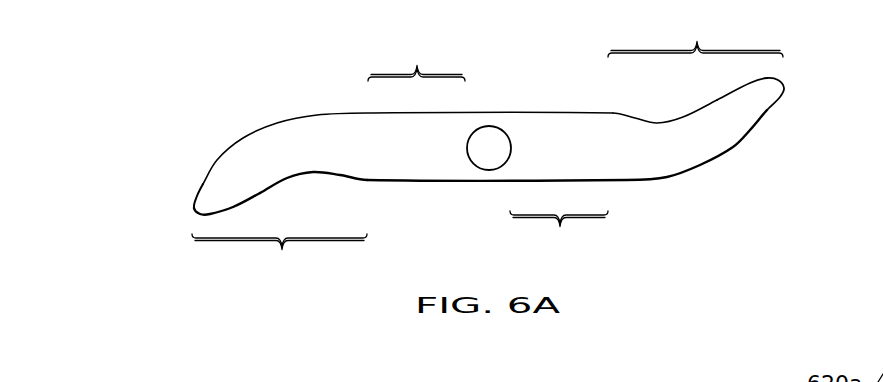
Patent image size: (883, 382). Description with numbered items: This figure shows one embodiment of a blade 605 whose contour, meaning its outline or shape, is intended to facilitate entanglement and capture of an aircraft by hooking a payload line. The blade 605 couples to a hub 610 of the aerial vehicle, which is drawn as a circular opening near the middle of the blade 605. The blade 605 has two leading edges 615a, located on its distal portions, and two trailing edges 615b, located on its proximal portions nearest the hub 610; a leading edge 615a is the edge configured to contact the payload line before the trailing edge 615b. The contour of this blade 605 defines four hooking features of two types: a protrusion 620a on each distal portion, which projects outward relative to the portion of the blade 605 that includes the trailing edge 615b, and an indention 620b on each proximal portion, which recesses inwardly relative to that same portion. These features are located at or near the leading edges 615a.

The blade 605 is at (488, 148).
The hub 610 is at (512, 145).
The leading edge 615a is at (487, 148).
The trailing edge 615b is at (488, 148).
The protrusion 620a is at (192, 207).
The indention 620b is at (308, 172).